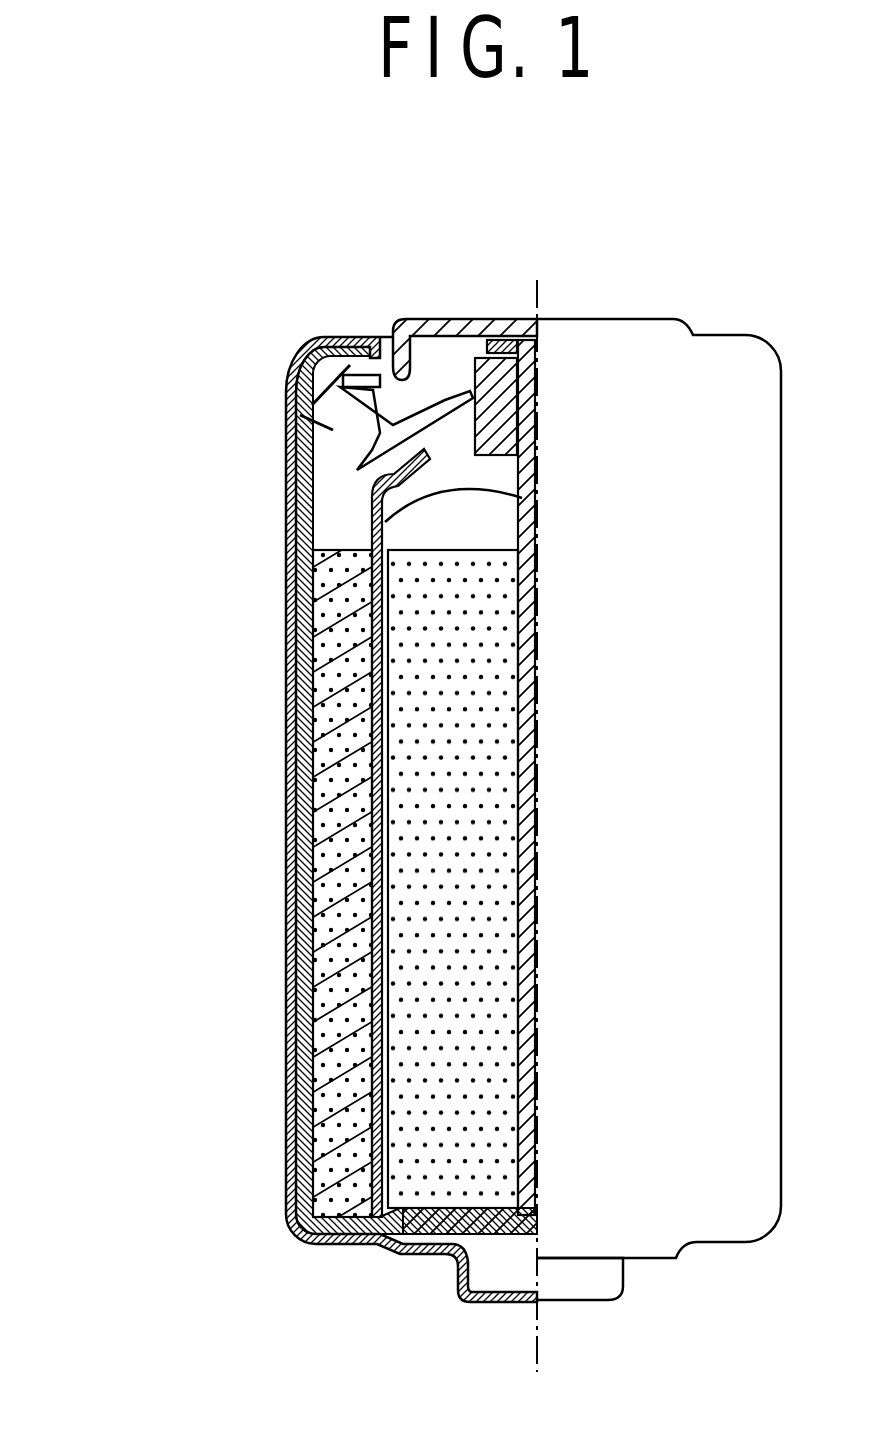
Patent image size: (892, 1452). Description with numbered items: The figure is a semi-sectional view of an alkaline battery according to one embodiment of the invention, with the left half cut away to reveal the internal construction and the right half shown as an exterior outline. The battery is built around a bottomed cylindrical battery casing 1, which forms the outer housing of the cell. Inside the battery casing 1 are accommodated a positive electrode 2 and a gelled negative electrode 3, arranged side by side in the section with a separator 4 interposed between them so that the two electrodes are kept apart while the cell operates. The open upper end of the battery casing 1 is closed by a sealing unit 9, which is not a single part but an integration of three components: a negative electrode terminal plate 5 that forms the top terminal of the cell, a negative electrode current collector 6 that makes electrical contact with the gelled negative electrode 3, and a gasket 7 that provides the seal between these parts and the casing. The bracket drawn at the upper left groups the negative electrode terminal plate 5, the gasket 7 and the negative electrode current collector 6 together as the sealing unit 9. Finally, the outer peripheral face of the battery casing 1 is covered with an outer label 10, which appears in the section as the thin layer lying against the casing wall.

The battery casing 1 is at (305, 713).
The positive electrode 2 is at (333, 993).
The gelled negative electrode 3 is at (402, 606).
The separator 4 is at (368, 810).
The negative electrode terminal plate 5 is at (455, 324).
The negative electrode current collector 6 is at (385, 515).
The gasket 7 is at (358, 447).
The sealing unit 9 is at (189, 223).
The outer label 10 is at (297, 1122).